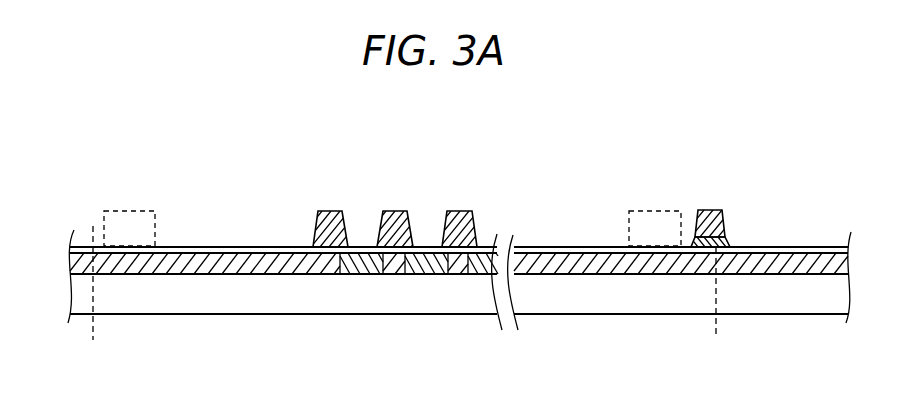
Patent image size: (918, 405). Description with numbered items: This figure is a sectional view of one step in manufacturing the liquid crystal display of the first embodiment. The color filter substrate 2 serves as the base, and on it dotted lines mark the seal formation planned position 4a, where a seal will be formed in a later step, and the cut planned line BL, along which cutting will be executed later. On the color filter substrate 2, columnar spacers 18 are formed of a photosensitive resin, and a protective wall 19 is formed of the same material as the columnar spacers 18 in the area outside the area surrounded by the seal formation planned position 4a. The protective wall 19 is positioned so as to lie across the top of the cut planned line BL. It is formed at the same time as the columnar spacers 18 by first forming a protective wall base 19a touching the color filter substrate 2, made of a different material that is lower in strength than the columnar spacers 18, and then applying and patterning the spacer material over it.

The color filter substrate 2 is at (62, 237).
The seal formation planned position 4a is at (134, 232).
The columnar spacers 18 is at (326, 210).
The protective wall 19 is at (737, 197).
The protective wall base 19a is at (690, 244).
The cut planned line BL is at (405, 298).